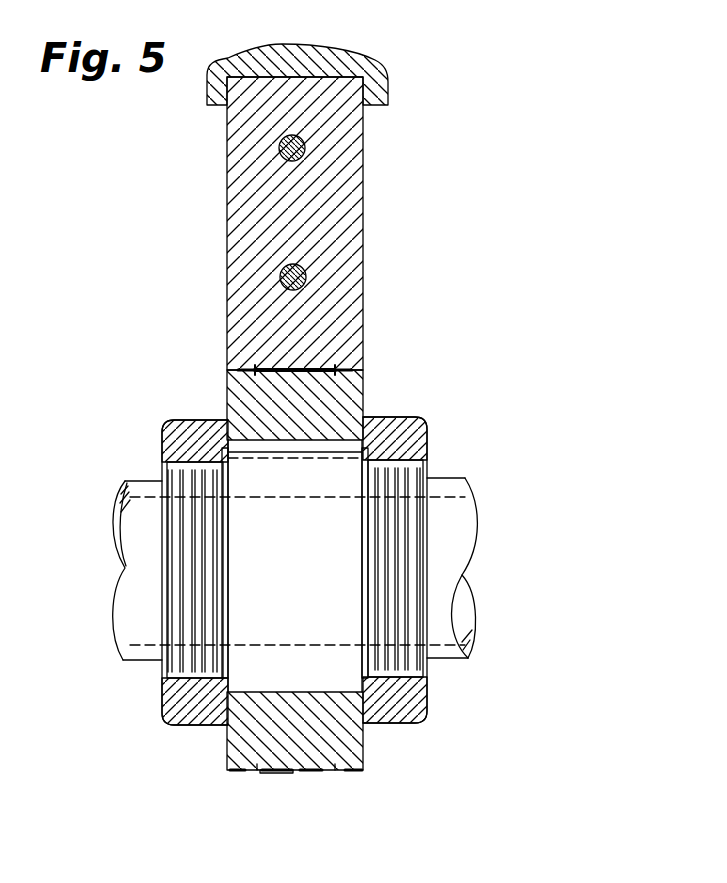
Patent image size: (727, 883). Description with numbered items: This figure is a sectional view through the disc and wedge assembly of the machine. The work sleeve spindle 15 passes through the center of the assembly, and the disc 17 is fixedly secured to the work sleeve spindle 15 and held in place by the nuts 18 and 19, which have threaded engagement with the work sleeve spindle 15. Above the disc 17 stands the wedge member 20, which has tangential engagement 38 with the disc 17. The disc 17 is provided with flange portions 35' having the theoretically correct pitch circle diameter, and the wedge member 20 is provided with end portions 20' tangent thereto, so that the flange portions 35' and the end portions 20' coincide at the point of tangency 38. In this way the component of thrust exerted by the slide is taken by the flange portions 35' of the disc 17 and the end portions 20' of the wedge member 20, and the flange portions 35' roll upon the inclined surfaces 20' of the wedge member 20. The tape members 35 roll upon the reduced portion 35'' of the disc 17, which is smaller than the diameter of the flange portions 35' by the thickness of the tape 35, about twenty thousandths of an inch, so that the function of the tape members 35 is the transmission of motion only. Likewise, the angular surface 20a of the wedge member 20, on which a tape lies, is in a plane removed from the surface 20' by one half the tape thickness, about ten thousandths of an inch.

The work sleeve spindle 15 is at (458, 492).
The disc 17 is at (355, 752).
The nut 18 is at (204, 420).
The nut 19 is at (400, 420).
The wedge member 20 is at (321, 207).
The angular surface 20a is at (283, 367).
The end portions 20' is at (290, 317).
The point of tangency 38 is at (364, 370).
The tape members 35 is at (268, 823).
The flange portions 35' is at (292, 823).
The reduced portion 35'' is at (323, 808).